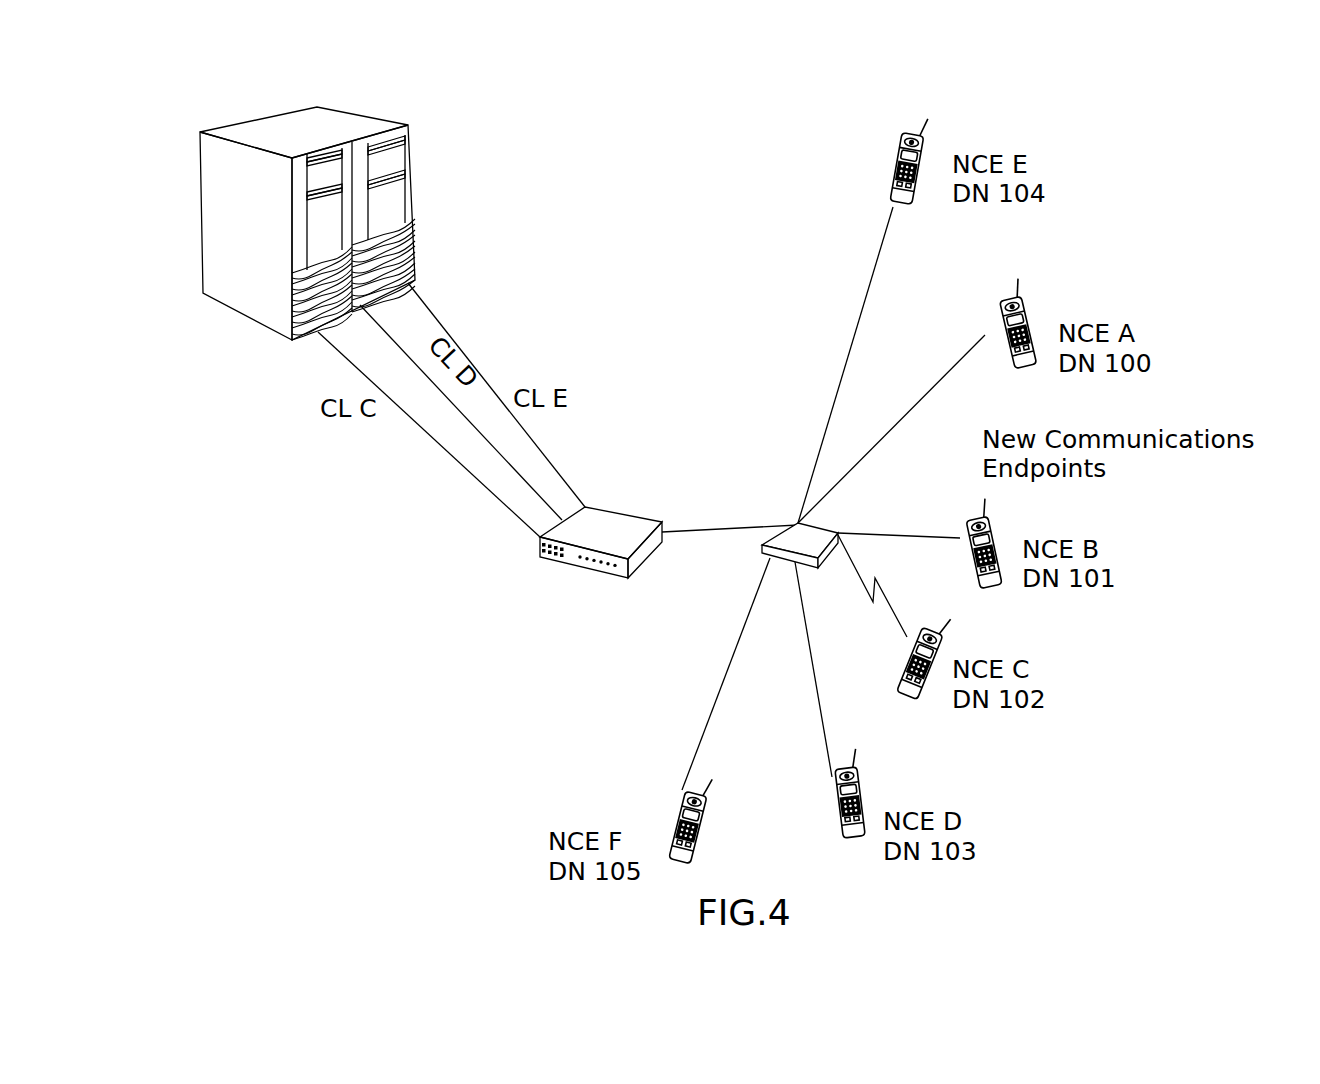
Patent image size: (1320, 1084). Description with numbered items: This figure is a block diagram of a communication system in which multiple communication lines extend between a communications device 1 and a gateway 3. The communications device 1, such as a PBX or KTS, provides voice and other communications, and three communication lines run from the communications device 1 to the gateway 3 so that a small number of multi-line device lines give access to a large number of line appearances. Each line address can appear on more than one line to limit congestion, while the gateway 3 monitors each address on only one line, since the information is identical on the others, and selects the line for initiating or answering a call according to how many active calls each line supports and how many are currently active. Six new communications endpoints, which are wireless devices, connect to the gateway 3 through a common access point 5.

The communications device 1 is at (223, 125).
The gateway 3 is at (629, 512).
The access point 5 is at (762, 545).